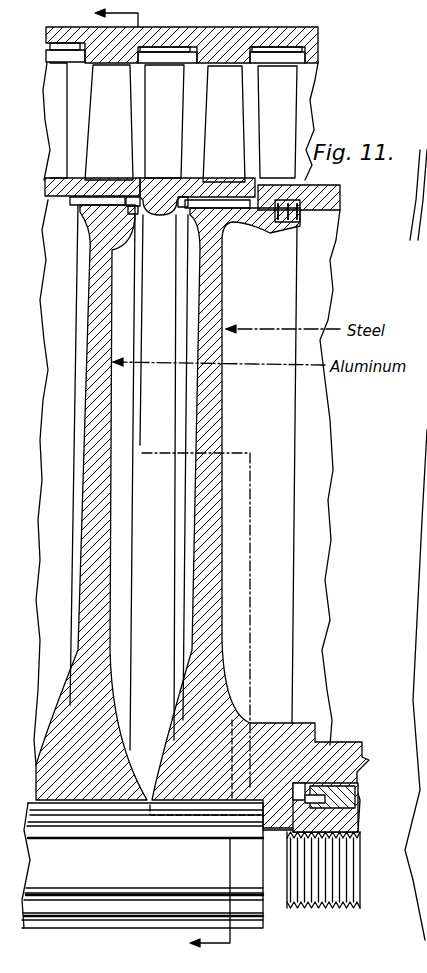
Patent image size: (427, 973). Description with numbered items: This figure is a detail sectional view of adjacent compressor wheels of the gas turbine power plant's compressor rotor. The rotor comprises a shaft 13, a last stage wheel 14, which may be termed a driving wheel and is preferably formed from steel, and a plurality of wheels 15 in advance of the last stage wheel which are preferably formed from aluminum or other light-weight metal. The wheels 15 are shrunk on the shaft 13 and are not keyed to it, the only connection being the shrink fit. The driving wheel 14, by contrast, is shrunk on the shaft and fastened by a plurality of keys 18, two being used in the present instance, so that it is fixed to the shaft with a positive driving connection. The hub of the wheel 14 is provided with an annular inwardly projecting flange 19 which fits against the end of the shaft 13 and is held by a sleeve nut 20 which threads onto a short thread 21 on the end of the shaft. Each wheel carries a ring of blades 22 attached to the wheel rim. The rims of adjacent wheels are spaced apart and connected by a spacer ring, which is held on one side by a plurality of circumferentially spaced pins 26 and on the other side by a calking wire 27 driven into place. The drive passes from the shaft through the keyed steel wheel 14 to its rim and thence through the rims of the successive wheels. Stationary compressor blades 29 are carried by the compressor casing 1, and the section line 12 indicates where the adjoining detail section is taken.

The compressor casing 1 is at (322, 38).
The section line 12— 12 is at (151, 480).
The shaft 13 is at (62, 925).
The last stage wheel 14 is at (223, 278).
The wheels 15 is at (105, 560).
The keys 18 is at (170, 803).
The annular inwardly projecting flange 19 is at (285, 835).
The sleeve nut 20 is at (362, 826).
The short thread 21 is at (315, 912).
The blades 22 is at (147, 122).
The pins 26 is at (78, 208).
The calking wire 27 is at (140, 216).
The stationary compressor blades 29 is at (280, 87).